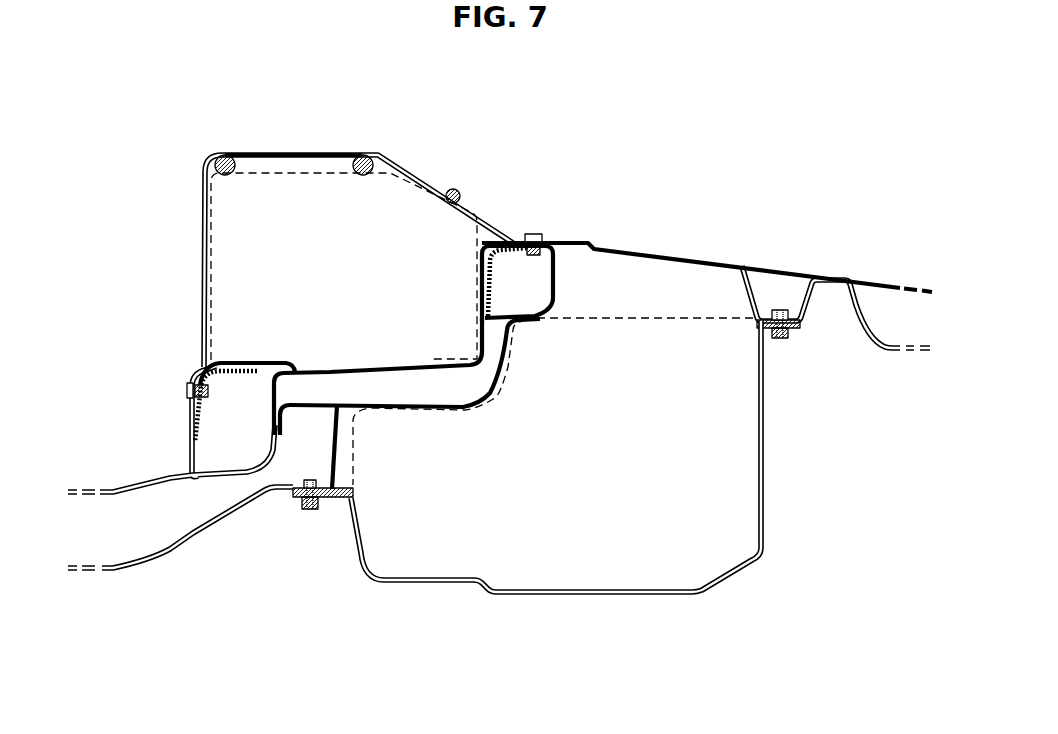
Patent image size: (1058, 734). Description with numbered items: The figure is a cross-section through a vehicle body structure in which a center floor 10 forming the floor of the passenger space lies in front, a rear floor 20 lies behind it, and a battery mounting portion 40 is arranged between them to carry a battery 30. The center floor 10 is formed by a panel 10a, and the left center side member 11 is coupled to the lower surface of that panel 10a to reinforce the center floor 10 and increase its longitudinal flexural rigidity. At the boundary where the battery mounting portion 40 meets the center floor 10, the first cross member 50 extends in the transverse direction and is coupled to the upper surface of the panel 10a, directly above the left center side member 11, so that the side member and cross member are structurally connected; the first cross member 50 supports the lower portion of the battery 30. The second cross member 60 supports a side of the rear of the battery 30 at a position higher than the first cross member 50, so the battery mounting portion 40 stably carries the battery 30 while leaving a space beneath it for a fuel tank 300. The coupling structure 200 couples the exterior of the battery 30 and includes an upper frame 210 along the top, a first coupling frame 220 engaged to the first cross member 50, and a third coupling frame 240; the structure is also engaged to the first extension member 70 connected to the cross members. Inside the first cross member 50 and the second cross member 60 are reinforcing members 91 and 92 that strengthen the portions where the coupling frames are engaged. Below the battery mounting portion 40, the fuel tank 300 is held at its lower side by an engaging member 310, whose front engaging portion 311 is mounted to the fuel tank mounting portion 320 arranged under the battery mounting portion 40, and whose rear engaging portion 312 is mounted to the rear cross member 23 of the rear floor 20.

The center floor 10 is at (102, 478).
The panel 10a is at (125, 487).
The left center side member 11 is at (185, 548).
The rear floor 20 is at (708, 250).
The rear cross member 23 is at (810, 298).
The battery 30 is at (313, 173).
The battery mounting portion 40 is at (381, 357).
The first cross member 50 is at (190, 435).
The second cross member 60 is at (555, 290).
The first extension member 70 is at (410, 410).
The reinforcing member 91 is at (205, 420).
The reinforcing member 92 is at (490, 288).
The coupling structure 200 is at (269, 142).
The upper frame 210 is at (225, 155).
The first coupling frame 220 is at (203, 257).
The third coupling frame 240 is at (363, 155).
The fuel tank 300 is at (648, 318).
The engaging member 310 is at (525, 597).
The front engaging portion 311 is at (337, 498).
The rear engaging portion 312 is at (802, 322).
The fuel tank mounting portion 320 is at (291, 478).